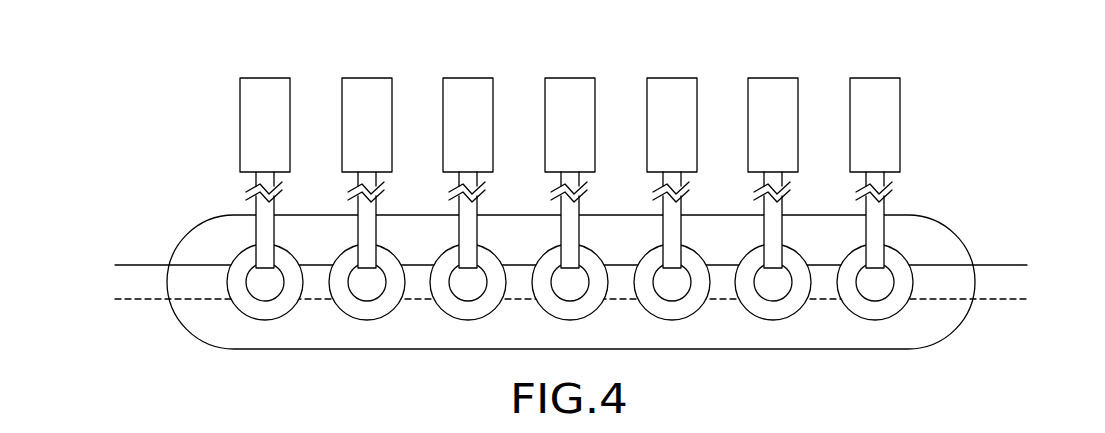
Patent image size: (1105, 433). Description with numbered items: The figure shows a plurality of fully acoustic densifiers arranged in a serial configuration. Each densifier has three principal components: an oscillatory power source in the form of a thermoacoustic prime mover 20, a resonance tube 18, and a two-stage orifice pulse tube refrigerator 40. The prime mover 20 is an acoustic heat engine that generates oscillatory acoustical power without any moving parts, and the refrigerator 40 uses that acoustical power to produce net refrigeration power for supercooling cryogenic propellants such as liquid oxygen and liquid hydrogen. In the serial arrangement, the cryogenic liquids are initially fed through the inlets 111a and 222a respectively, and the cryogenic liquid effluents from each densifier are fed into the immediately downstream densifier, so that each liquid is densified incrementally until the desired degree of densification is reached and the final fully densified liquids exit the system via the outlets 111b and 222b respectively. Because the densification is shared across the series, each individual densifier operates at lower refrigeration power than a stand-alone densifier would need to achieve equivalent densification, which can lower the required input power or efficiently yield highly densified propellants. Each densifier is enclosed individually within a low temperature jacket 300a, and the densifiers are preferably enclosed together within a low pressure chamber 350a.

The thermoacoustic prime mover 20 is at (358, 78).
The resonance tube 18 is at (256, 224).
The two-stage orifice pulse tube refrigerator 40 is at (263, 302).
The low temperature jacket 300a is at (798, 316).
The low pressure chamber 350a is at (946, 338).
The inlet 111a is at (140, 265).
The outlet 111b is at (1005, 264).
The inlet 222a is at (148, 300).
The outlet 222b is at (1000, 299).